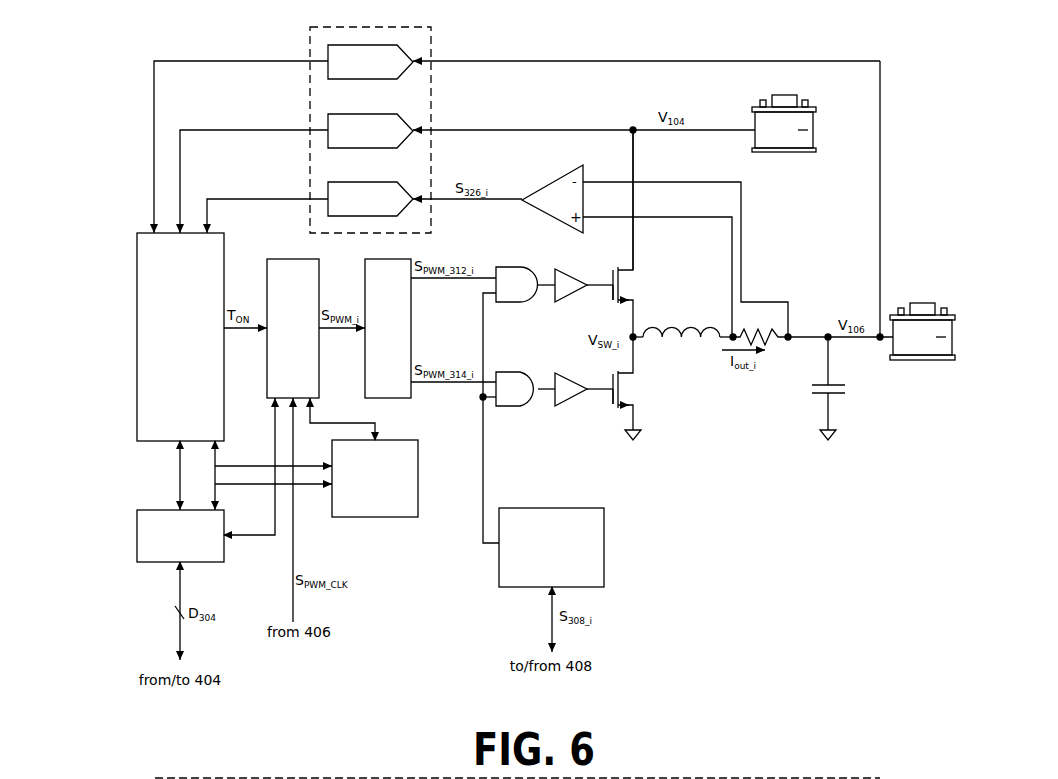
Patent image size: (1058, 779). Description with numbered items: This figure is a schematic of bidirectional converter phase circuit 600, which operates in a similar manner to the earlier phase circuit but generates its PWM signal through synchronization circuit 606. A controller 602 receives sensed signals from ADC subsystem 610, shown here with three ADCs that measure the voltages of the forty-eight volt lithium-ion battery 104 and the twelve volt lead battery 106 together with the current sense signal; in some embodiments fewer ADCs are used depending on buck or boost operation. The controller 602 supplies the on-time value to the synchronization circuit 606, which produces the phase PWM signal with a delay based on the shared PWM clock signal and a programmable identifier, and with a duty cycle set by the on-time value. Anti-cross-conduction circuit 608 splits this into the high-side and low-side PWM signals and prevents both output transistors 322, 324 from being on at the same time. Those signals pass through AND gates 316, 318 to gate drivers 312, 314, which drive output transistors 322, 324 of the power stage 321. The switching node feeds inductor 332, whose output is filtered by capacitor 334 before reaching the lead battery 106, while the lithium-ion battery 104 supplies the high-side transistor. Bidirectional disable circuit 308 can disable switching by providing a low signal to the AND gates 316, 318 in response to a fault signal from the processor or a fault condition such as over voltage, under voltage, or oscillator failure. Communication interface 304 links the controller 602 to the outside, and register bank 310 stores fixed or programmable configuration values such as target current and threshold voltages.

The bidirectional converter phase circuit 600 is at (92, 62).
The ADC subsystem 610 is at (431, 40).
The controller 602 is at (224, 256).
The synchronization circuit 606 is at (290, 259).
The anti-cross-conduction circuit 608 is at (400, 259).
The 48 V Li-Ion battery 104 is at (788, 95).
The 12 V lead battery 106 is at (924, 303).
The AND gate 316 is at (512, 267).
The gate driver 312 is at (568, 269).
The output transistor 322 is at (615, 305).
The AND gate 318 is at (512, 372).
The gate driver 314 is at (568, 373).
The output transistor 324 is at (621, 400).
The power stage 321 is at (676, 403).
The inductor 332 is at (655, 328).
The capacitor 334 is at (820, 383).
The communication interface 304 is at (137, 552).
The register bank 310 is at (380, 518).
The bidirectional disable circuit 308 is at (556, 508).